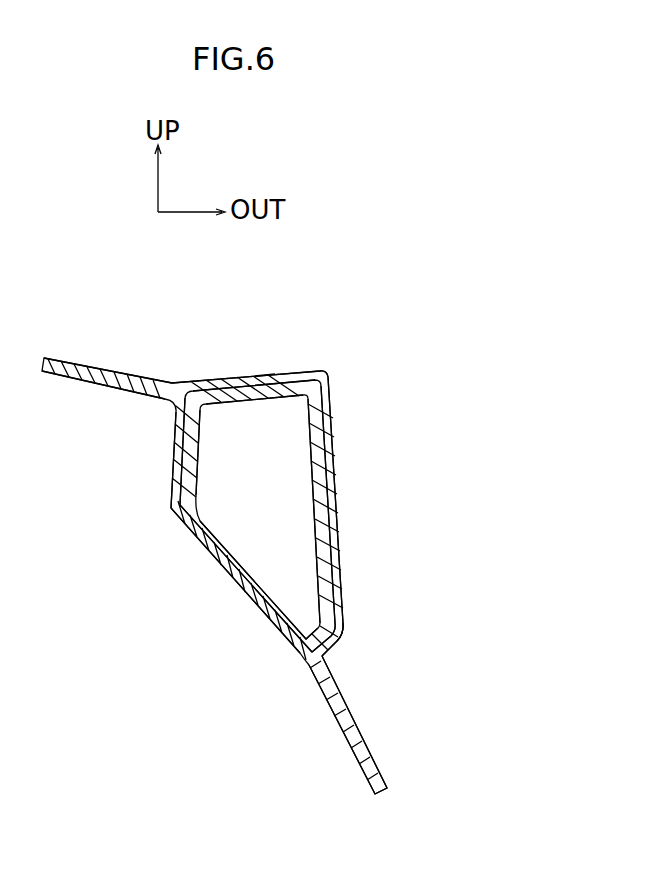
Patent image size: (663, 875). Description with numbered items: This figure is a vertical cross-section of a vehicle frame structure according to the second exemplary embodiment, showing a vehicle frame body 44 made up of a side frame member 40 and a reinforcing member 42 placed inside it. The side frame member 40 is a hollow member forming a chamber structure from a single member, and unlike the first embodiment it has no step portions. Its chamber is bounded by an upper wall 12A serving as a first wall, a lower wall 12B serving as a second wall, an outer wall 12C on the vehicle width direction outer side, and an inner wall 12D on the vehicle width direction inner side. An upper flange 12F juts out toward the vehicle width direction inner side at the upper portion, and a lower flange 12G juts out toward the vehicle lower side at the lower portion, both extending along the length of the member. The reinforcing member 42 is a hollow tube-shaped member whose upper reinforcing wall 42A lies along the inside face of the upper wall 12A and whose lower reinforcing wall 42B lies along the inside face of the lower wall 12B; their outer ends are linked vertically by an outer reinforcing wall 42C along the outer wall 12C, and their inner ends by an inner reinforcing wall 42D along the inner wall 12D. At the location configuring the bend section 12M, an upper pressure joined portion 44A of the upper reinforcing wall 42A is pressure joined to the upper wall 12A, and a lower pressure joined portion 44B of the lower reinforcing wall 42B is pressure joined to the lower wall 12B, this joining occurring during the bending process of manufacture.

The side frame member 40 is at (330, 314).
The bend section 12M is at (342, 340).
The upper flange 12F is at (107, 370).
The upper wall 12A is at (243, 380).
The lower wall 12B is at (331, 647).
The outer wall 12C is at (340, 462).
The inner wall 12D is at (172, 508).
The lower flange 12G is at (372, 740).
The reinforcing member 42 is at (332, 438).
The upper reinforcing wall 42A is at (253, 404).
The lower reinforcing wall 42B is at (303, 627).
The outer reinforcing wall 42C is at (318, 495).
The inner reinforcing wall 42D is at (208, 497).
The vehicle frame body 44 is at (434, 348).
The upper pressure joined portion 44A is at (262, 377).
The lower pressure joined portion 44B is at (341, 636).